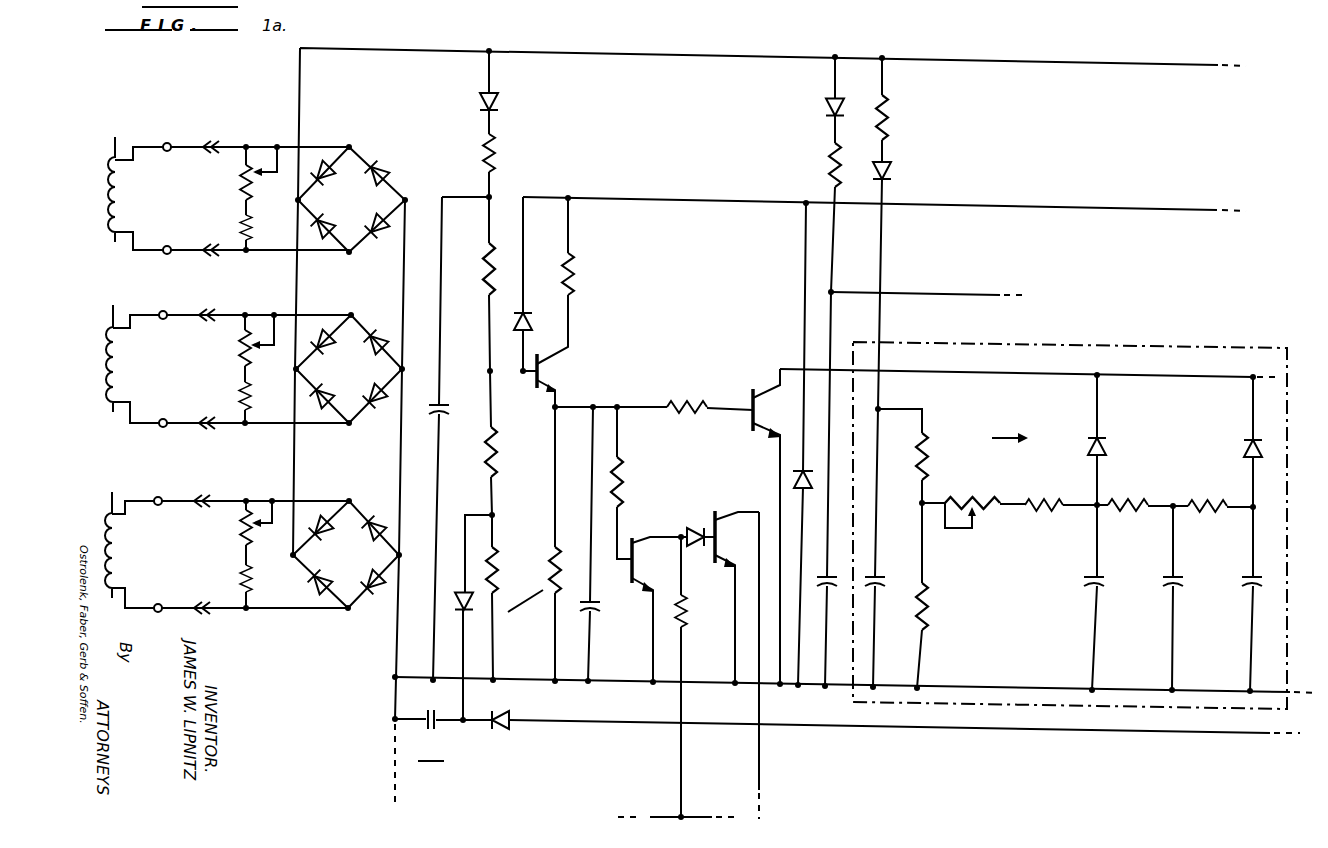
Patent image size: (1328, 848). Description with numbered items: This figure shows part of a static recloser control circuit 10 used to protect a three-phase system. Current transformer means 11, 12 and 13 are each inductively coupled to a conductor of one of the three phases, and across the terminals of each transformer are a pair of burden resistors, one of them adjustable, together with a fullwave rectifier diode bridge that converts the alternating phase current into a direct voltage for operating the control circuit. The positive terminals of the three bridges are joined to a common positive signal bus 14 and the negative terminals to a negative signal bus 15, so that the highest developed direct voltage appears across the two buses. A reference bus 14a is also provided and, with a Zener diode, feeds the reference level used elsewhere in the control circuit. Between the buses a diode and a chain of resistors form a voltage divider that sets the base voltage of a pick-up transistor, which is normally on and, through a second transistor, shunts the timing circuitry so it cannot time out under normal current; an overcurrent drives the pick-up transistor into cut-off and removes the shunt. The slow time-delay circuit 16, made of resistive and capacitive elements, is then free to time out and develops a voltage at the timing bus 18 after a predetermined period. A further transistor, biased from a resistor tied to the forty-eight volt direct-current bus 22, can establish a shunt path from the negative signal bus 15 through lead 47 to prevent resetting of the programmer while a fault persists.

The static recloser control circuit 10 is at (302, 716).
The current transformer 11 is at (124, 198).
The current transformer 12 is at (122, 365).
The current transformer 13 is at (118, 556).
The positive signal bus 14 is at (299, 276).
The reference bus 14a is at (1104, 204).
The negative signal bus 15 is at (399, 274).
The slow time-delay circuit 16 is at (989, 710).
The timing bus 18 is at (1164, 379).
The 48 volt D.C. bus 22 is at (650, 817).
The lead 47 is at (759, 762).